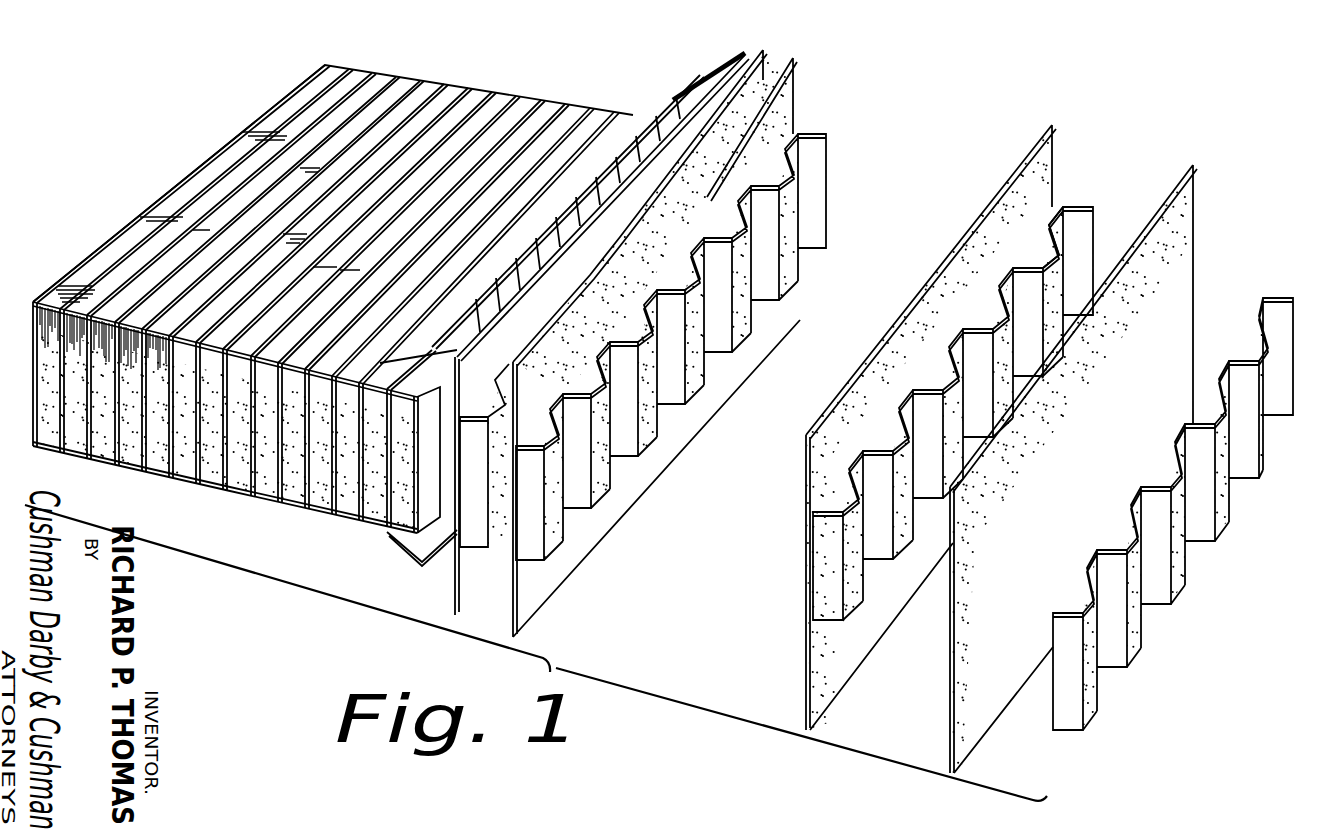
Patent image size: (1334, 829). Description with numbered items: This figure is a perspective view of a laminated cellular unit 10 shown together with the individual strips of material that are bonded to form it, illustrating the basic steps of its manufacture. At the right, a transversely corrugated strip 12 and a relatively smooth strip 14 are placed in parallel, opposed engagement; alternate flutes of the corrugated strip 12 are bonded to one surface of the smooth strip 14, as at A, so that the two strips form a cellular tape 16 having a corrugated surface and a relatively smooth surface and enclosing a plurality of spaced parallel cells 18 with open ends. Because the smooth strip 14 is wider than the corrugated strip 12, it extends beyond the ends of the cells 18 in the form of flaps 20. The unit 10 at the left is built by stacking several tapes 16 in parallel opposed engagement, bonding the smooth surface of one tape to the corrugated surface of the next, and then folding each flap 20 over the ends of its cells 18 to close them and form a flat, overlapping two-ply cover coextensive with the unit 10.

The laminated cellular unit 10 is at (461, 71).
The transversely corrugated strip 12 is at (816, 160).
The relatively smooth strip 14 is at (810, 500).
The cellular tape 16 is at (1104, 160).
The cells 18 is at (1004, 292).
The flaps 20 is at (405, 78).
The bonded junction A is at (1058, 220).